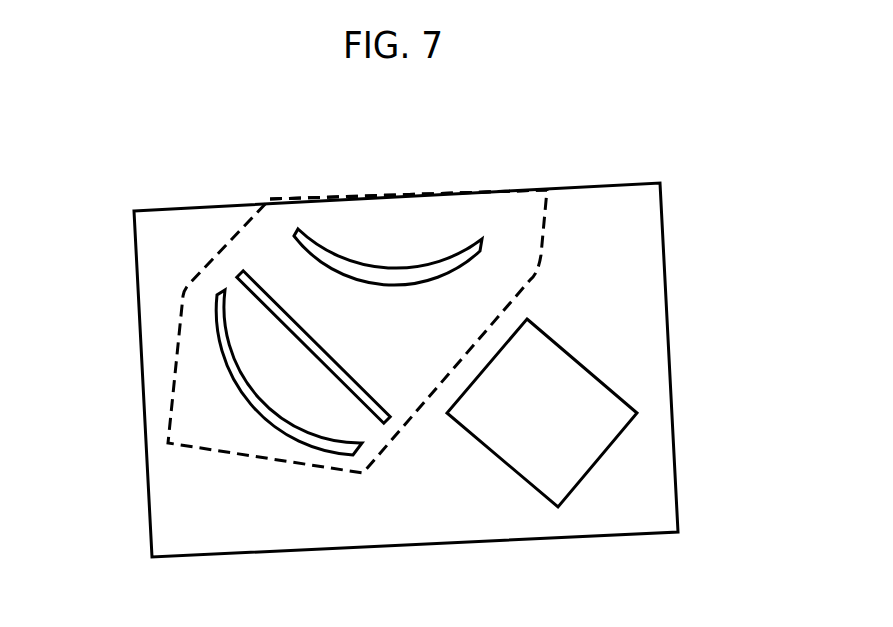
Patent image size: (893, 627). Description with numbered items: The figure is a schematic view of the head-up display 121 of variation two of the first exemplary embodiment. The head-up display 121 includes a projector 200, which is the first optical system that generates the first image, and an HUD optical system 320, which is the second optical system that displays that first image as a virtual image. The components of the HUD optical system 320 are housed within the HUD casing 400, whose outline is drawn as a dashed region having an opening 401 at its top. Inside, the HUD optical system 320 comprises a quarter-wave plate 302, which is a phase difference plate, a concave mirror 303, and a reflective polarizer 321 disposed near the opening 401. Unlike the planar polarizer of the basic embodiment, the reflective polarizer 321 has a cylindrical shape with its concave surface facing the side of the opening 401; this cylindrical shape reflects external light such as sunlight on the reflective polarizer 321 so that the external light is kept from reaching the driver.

The head-up display 121 is at (607, 515).
The HUD casing 400 is at (415, 542).
The HUD optical system 320 is at (228, 452).
The opening 401 is at (453, 192).
The reflective polarizer 321 is at (296, 231).
The quarter-wave plate 302 is at (237, 277).
The concave mirror 303 is at (222, 358).
The projector 200 is at (615, 392).